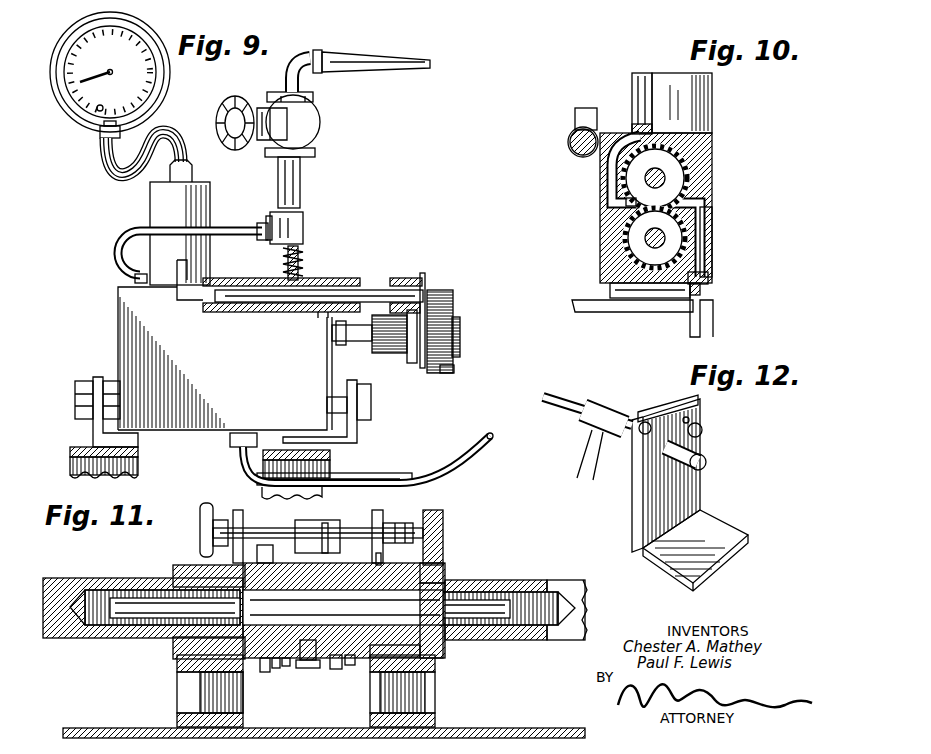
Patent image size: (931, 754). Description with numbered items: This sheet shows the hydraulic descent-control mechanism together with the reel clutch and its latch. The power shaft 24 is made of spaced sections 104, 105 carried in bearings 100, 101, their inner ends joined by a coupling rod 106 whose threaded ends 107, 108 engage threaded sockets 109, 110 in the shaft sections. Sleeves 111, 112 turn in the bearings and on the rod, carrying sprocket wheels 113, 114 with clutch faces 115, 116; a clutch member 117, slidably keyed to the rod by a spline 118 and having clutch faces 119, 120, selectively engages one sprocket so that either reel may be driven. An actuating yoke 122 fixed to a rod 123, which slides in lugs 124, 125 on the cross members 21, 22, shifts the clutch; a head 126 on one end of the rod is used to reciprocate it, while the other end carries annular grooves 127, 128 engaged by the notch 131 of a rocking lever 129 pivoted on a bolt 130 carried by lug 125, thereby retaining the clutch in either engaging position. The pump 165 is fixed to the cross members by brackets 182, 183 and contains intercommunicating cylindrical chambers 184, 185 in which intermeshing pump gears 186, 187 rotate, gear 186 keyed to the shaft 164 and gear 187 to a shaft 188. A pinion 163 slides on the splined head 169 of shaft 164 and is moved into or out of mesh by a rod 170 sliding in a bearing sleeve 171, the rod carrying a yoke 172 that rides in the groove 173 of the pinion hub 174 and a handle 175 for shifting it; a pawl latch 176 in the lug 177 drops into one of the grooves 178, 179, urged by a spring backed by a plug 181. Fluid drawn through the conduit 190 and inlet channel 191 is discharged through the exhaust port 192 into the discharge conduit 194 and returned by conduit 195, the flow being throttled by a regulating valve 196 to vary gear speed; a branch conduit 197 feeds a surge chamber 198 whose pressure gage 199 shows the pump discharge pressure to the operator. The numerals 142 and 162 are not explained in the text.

In FIG. 9, the cross member 21 is at (140, 455).
In FIG. 10, the cross member 21 is at (600, 305).
In FIG. 11, the cross member 21 is at (177, 685).
In FIG. 9, the cross member 22 is at (332, 465).
In FIG. 11, the cross member 22 is at (420, 692).
In FIG. 11, the power shaft 24 is at (490, 580).
In FIG. 11, the bearing 100 is at (172, 575).
In FIG. 11, the bearing 101 is at (440, 565).
In FIG. 11, the shaft section 104 is at (60, 640).
In FIG. 11, the shaft section 105 is at (588, 563).
In FIG. 11, the coupling rod 106 is at (428, 655).
In FIG. 11, the threaded end 107 is at (150, 640).
In FIG. 11, the threaded end 108 is at (500, 630).
In FIG. 11, the threaded socket 109 is at (105, 628).
In FIG. 11, the threaded socket 110 is at (470, 628).
In FIG. 11, the sleeve 111 is at (180, 567).
In FIG. 11, the sleeve 112 is at (445, 578).
In FIG. 11, the sprocket wheel 113 is at (273, 555).
In FIG. 11, the sprocket wheel 114 is at (372, 528).
In FIG. 11, the clutch face 115 is at (265, 672).
In FIG. 11, the clutch face 116 is at (336, 669).
In FIG. 11, the clutch member 117 is at (312, 662).
In FIG. 11, the spline 118 is at (276, 668).
In FIG. 11, the clutch face 119 is at (286, 666).
In FIG. 11, the clutch face 120 is at (350, 665).
In FIG. 12, the actuating yoke 122 is at (585, 437).
In FIG. 11, the actuating yoke 122 is at (310, 527).
In FIG. 12, the rod 123 is at (570, 405).
In FIG. 11, the rod 123 is at (258, 528).
In FIG. 11, the lug 124 is at (230, 506).
In FIG. 12, the lug 125 is at (705, 518).
In FIG. 11, the lug 125 is at (382, 556).
In FIG. 11, the head 126 is at (203, 527).
In FIG. 12, the annular groove 127 is at (655, 455).
In FIG. 12, the annular groove 128 is at (703, 455).
In FIG. 11, the annular groove 128 is at (440, 518).
In FIG. 12, the rocking lever 129 is at (668, 415).
In FIG. 11, the rocking lever 129 is at (400, 523).
In FIG. 12, the bolt 130 is at (702, 430).
In FIG. 12, the notch 131 is at (700, 418).
In FIG. 11, the washer 142 is at (320, 668).
In FIG. 9, the gear 162 is at (452, 306).
In FIG. 9, the pinion 163 is at (452, 298).
In FIG. 9, the shaft 164 is at (345, 345).
In FIG. 10, the shaft 164 is at (665, 175).
In FIG. 9, the pump 165 is at (118, 318).
In FIG. 10, the pump 165 is at (713, 140).
In FIG. 9, the splined head 169 is at (385, 356).
In FIG. 9, the rod 170 is at (405, 292).
In FIG. 10, the rod 170 is at (570, 140).
In FIG. 9, the bearing sleeve 171 is at (366, 290).
In FIG. 10, the bearing sleeve 171 is at (575, 133).
In FIG. 9, the yoke 172 is at (423, 286).
In FIG. 9, the groove 173 is at (413, 365).
In FIG. 9, the hub 174 is at (434, 372).
In FIG. 9, the handle 175 is at (178, 292).
In FIG. 9, the pawl latch 176 is at (306, 247).
In FIG. 9, the lug 177 is at (306, 262).
In FIG. 10, the lug 177 is at (590, 108).
In FIG. 9, the groove 178 is at (292, 312).
In FIG. 9, the groove 179 is at (318, 316).
In FIG. 9, the plug 181 is at (306, 230).
In FIG. 9, the bracket 182 is at (90, 428).
In FIG. 10, the bracket 182 is at (610, 287).
In FIG. 9, the bracket 183 is at (360, 437).
In FIG. 10, the cylindrical chamber 184 is at (625, 200).
In FIG. 10, the cylindrical chamber 185 is at (666, 240).
In FIG. 10, the pump gear 186 is at (690, 180).
In FIG. 10, the pump gear 187 is at (640, 240).
In FIG. 10, the shaft 188 is at (708, 262).
In FIG. 9, the conduit 190 is at (445, 458).
In FIG. 10, the conduit 190 is at (713, 320).
In FIG. 10, the inlet channel 191 is at (712, 233).
In FIG. 10, the exhaust port 192 is at (612, 208).
In FIG. 9, the discharge conduit 194 is at (302, 175).
In FIG. 10, the discharge conduit 194 is at (640, 80).
In FIG. 9, the conduit 195 is at (408, 50).
In FIG. 9, the regulating valve 196 is at (318, 110).
In FIG. 9, the branch conduit 197 is at (118, 232).
In FIG. 9, the surge chamber 198 is at (148, 190).
In FIG. 9, the pressure gage 199 is at (160, 88).